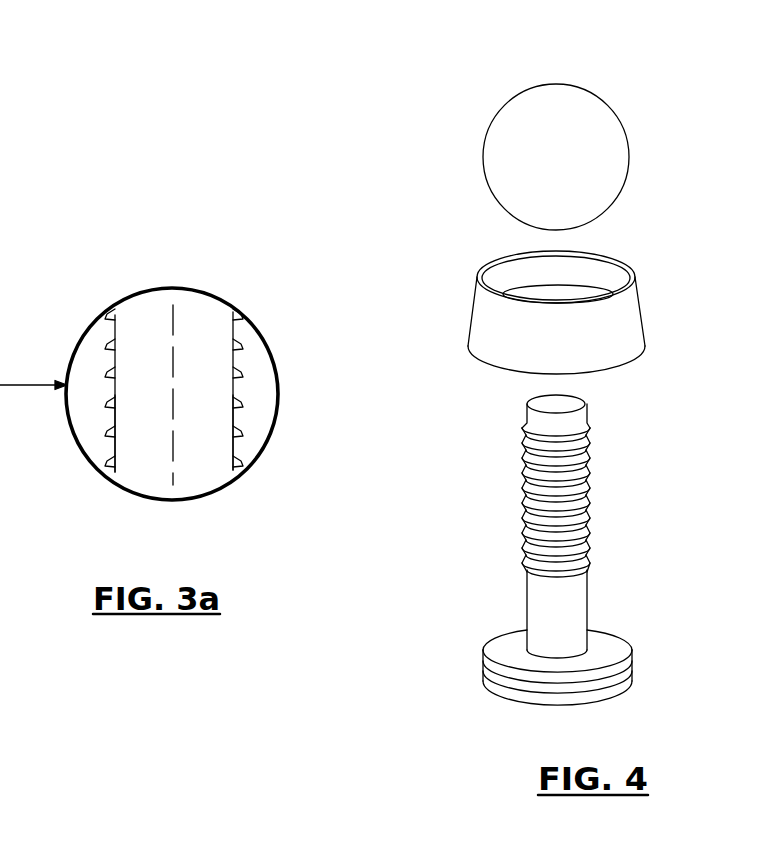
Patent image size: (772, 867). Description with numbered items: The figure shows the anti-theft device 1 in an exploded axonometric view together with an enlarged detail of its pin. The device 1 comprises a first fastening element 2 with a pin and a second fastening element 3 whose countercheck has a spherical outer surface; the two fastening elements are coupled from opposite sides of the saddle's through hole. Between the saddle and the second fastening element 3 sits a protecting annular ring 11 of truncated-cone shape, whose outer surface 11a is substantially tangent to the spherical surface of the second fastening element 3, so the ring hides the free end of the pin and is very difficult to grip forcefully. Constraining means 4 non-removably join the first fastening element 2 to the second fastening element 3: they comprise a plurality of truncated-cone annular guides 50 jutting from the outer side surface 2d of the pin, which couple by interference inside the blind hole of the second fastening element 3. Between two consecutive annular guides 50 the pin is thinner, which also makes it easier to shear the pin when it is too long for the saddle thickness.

In FIG. 4, the anti-theft device 1 is at (432, 300).
In FIG. 4, the first fastening element 2 is at (512, 590).
In FIG. 3a, the outer side surface of the pin 2d is at (238, 430).
In FIG. 4, the second fastening element 3 is at (510, 127).
In FIG. 3a, the constraining means 4 is at (243, 408).
In FIG. 4, the constraining means 4 is at (597, 505).
In FIG. 4, the protecting annular ring 11 is at (640, 270).
In FIG. 4, the outer surface of the protecting ring 11a is at (625, 307).
In FIG. 3a, the annular guides 50 is at (107, 420).